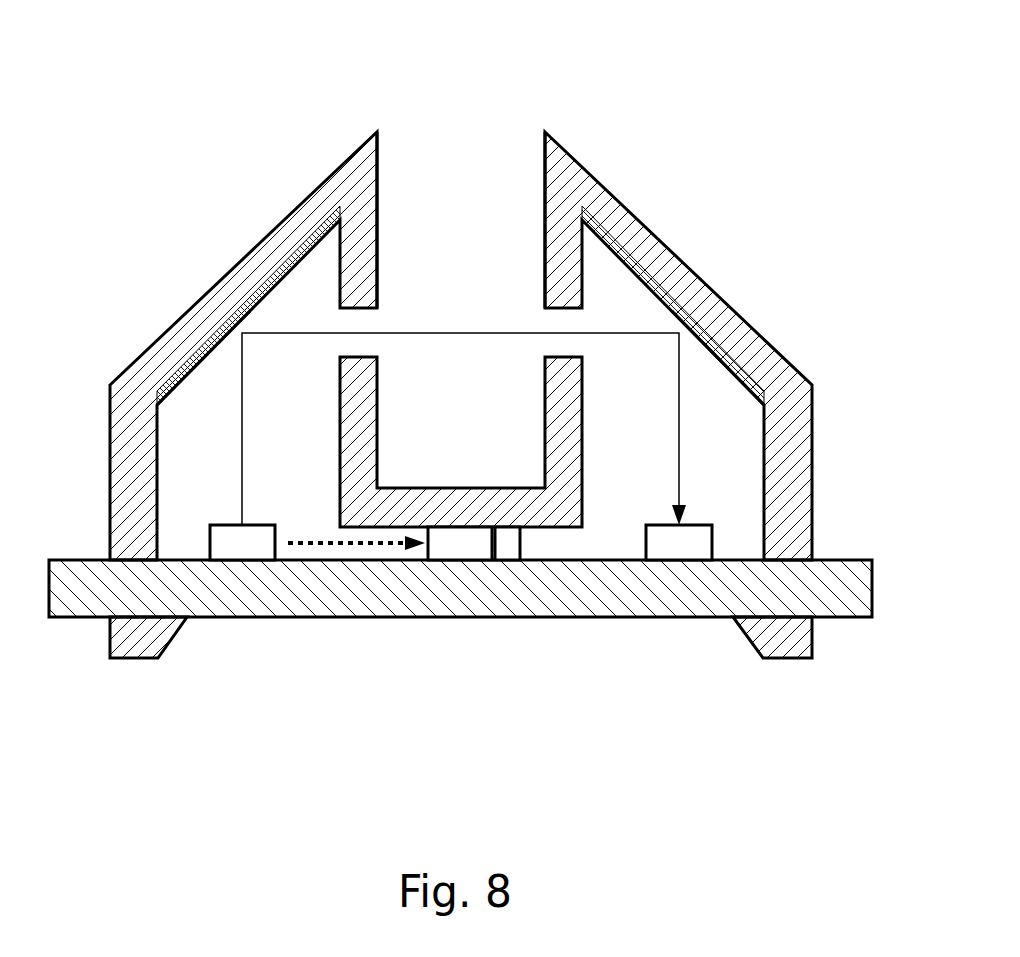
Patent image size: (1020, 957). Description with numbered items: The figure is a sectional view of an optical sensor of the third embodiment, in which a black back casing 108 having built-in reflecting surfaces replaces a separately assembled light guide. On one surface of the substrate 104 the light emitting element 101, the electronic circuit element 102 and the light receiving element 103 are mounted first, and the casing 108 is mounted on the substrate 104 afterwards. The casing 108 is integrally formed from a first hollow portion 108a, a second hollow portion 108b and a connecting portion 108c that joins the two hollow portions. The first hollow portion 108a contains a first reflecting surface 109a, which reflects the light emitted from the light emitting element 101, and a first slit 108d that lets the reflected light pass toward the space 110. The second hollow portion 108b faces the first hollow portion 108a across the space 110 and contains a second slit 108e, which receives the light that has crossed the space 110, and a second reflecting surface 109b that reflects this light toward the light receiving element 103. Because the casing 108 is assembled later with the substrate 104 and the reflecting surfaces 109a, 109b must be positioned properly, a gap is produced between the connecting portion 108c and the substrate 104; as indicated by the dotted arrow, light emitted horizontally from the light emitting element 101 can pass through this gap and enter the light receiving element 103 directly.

The light emitting element 101 is at (245, 550).
The electronic circuit element 102 is at (452, 543).
The light receiving element 103 is at (678, 548).
The substrate 104 is at (625, 602).
The casing 108 is at (504, 380).
The first hollow portion 108a is at (362, 147).
The second hollow portion 108b is at (562, 147).
The connecting portion 108c is at (523, 517).
The first slit 108d is at (257, 340).
The second slit 108e is at (664, 342).
The first reflecting surface 109a is at (197, 382).
The second reflecting surface 109b is at (720, 377).
The space 110 is at (467, 208).